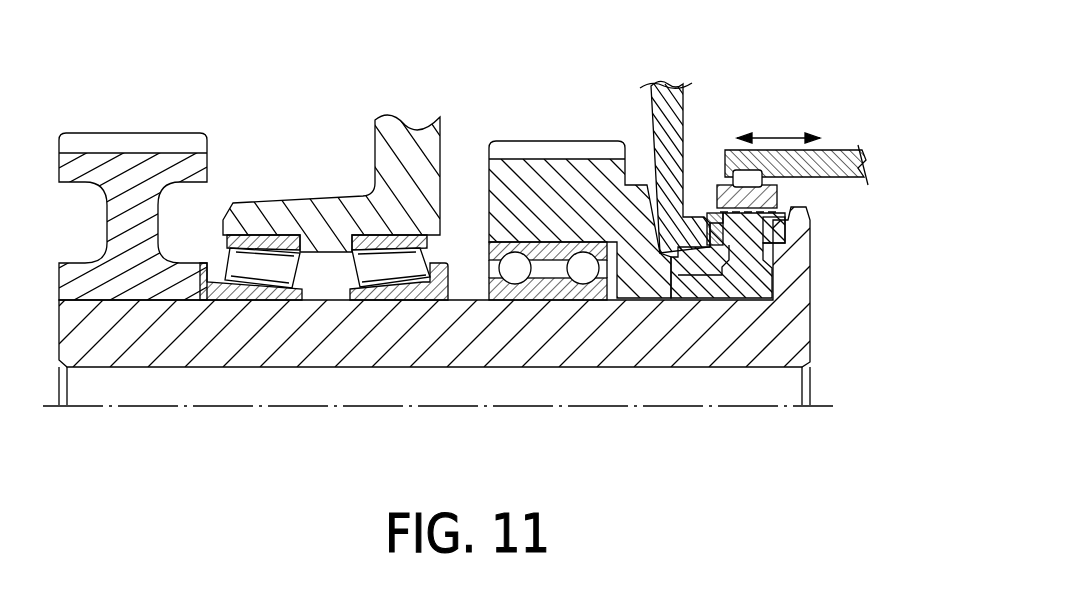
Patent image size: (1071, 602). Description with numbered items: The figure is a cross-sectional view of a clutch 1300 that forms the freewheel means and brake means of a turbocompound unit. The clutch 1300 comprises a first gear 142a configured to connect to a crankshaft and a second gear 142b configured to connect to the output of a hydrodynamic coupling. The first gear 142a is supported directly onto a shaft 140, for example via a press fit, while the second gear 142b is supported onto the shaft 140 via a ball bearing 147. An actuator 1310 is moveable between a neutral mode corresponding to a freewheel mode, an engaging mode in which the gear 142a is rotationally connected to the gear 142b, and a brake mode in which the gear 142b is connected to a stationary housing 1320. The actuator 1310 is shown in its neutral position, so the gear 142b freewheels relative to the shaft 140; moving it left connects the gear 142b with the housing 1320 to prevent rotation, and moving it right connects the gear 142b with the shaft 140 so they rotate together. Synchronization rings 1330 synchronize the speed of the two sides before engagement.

The shaft 140 is at (662, 332).
The first gear 142a is at (141, 180).
The second gear 142b is at (548, 178).
The ball bearing 147 is at (542, 296).
The clutch 1300 is at (832, 310).
The actuator 1310 is at (845, 160).
The stationary housing 1320 is at (682, 110).
The synchronization rings 1330 is at (795, 238).